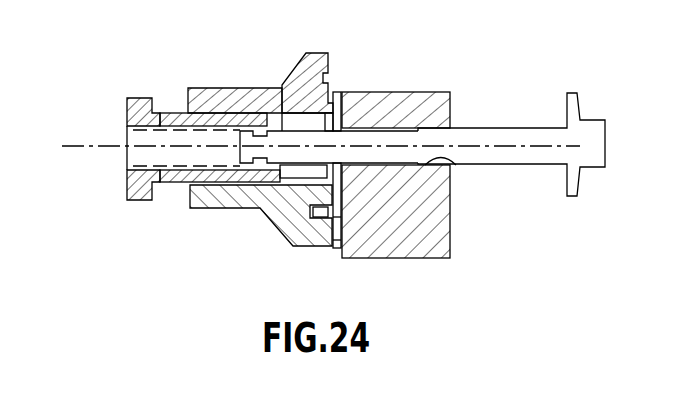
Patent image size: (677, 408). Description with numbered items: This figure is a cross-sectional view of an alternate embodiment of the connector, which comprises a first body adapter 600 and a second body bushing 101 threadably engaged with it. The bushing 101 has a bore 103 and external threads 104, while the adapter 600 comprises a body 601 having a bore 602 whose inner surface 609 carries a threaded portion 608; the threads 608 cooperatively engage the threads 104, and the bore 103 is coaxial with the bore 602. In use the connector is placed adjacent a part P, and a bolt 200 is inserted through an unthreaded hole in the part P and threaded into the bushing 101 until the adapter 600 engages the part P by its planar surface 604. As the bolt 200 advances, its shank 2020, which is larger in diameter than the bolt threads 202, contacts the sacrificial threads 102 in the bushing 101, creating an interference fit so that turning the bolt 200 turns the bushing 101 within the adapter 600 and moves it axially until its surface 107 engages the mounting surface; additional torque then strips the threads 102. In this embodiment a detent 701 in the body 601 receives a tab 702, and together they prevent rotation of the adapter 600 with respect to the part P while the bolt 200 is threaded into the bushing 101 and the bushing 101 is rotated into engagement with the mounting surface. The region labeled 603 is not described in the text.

The bushing 101 is at (174, 177).
The threads 102 is at (290, 176).
The bore 103 is at (204, 162).
The threads 104 is at (178, 113).
The surface 107 is at (128, 185).
The adapter 600 is at (222, 147).
The body 601 is at (290, 85).
The bore 602 is at (292, 190).
The upper nut body 603 is at (186, 95).
The surface 604 is at (375, 92).
The threaded portion 608 is at (308, 115).
The inner surface 609 is at (298, 125).
The detent 701 is at (312, 217).
The tab 702 is at (337, 230).
The part P is at (424, 224).
The bolt 200 is at (511, 184).
The bolt threads 202 is at (403, 128).
The shank 2020 is at (455, 163).